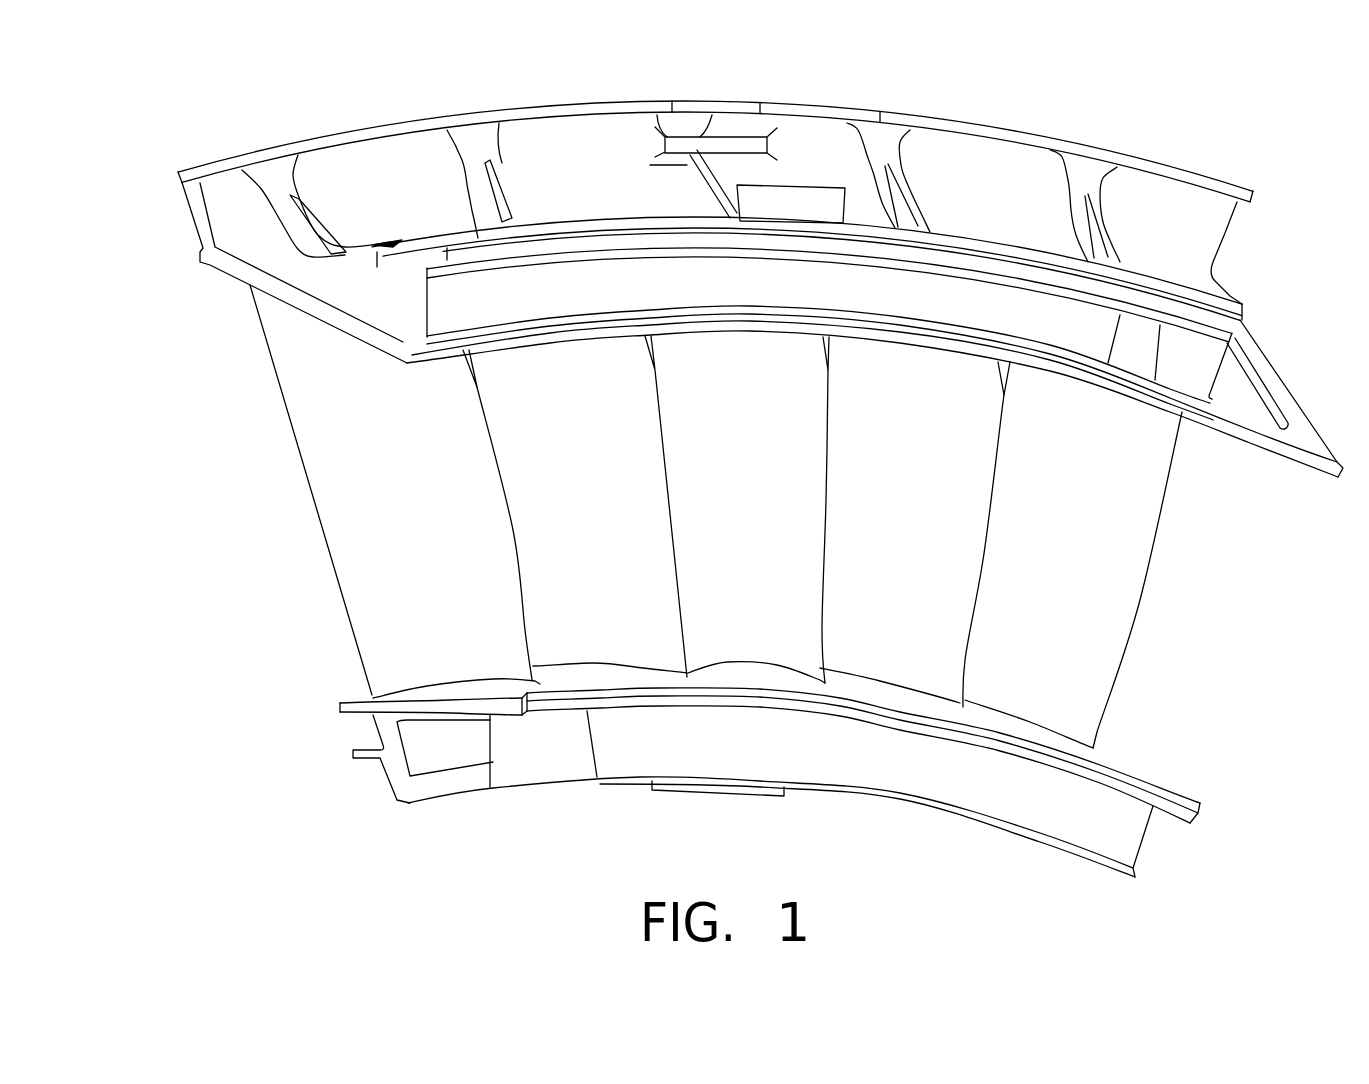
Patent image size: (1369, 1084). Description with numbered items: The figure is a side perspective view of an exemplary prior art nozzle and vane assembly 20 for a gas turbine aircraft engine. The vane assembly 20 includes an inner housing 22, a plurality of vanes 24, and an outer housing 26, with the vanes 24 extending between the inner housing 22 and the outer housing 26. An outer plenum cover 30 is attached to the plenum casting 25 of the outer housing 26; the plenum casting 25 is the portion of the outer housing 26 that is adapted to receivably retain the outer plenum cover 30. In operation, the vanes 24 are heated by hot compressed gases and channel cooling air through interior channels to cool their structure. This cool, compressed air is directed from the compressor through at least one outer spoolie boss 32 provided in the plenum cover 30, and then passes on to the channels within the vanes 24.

The turbine nozzle segment 20 is at (150, 487).
The inner band 22 is at (300, 771).
The vanes 24 is at (373, 557).
The outer band flange 25 is at (403, 267).
The outer band 26 is at (168, 277).
The rail 30 is at (460, 230).
The mounting box 32 is at (810, 183).